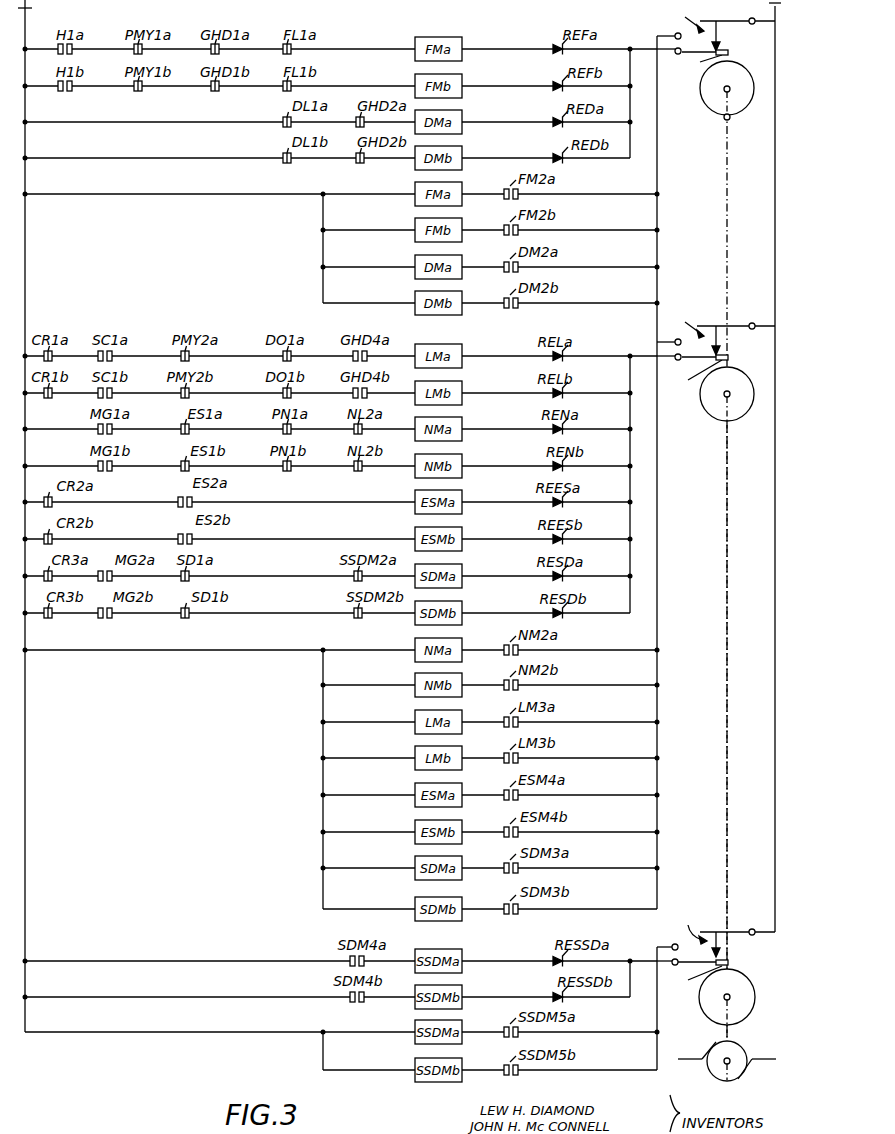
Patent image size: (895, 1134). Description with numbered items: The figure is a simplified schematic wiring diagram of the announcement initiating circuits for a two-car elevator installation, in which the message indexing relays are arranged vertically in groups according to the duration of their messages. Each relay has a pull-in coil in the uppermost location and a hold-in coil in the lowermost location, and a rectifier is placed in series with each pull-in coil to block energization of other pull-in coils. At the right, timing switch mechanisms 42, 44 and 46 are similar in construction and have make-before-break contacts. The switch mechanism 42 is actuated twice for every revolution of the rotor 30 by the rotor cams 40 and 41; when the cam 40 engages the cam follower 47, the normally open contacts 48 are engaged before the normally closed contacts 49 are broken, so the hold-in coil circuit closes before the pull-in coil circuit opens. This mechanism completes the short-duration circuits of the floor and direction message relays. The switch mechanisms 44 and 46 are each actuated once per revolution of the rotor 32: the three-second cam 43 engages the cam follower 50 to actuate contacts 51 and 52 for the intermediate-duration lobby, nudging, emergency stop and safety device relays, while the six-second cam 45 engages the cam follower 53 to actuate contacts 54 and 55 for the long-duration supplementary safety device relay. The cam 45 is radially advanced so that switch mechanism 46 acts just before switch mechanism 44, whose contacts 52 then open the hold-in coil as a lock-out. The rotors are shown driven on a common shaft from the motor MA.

The rotor 30 is at (738, 112).
The rotor 32 is at (733, 418).
The rotor cam 40 is at (733, 57).
The rotor cam 41 is at (728, 120).
The switch mechanism 42 is at (720, 14).
The rotor cam 43 is at (732, 362).
The switch mechanism 44 is at (740, 320).
The rotor cam 45 is at (745, 975).
The switch mechanism 46 is at (737, 928).
The cam follower 47 is at (700, 64).
The normally open contacts 48 is at (728, 47).
The normally closed contacts 49 is at (679, 20).
The cam follower 50 is at (696, 376).
The contacts 51 is at (728, 352).
The contacts 52 is at (683, 323).
The cam follower 53 is at (697, 979).
The contacts 54 is at (728, 955).
The contacts 55 is at (691, 926).
The motor MA is at (742, 1048).